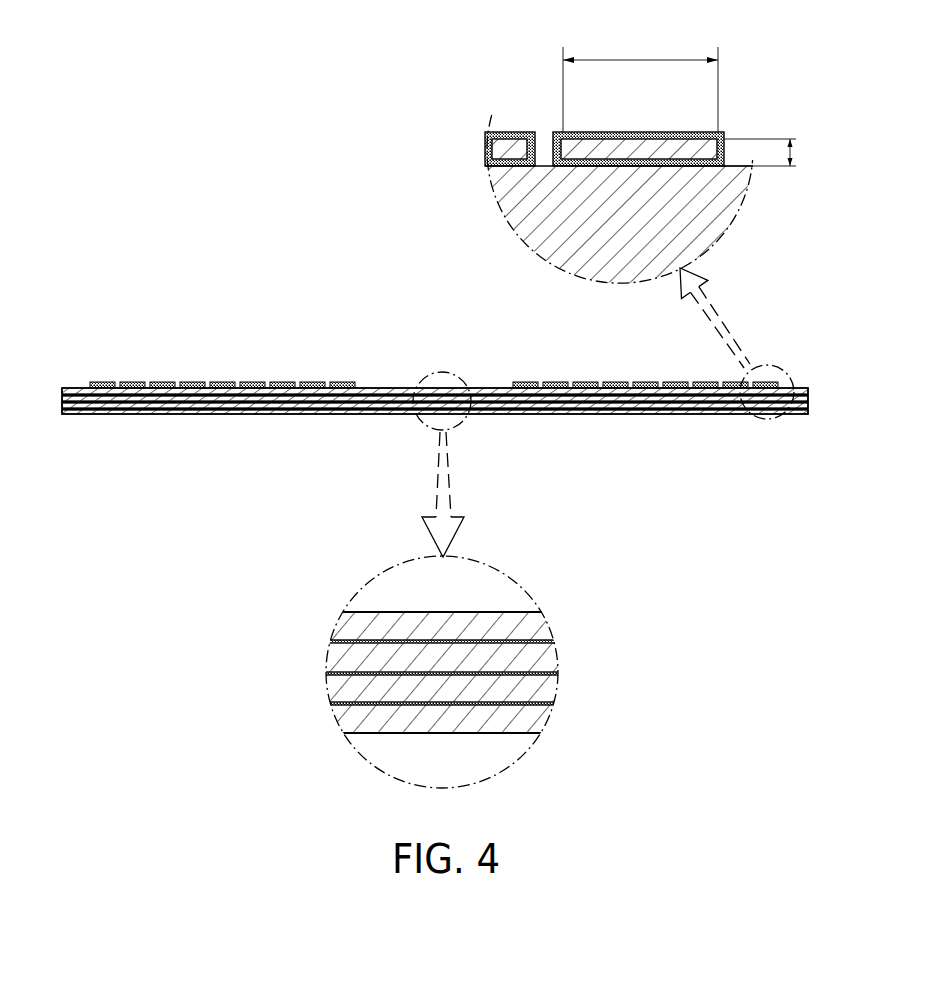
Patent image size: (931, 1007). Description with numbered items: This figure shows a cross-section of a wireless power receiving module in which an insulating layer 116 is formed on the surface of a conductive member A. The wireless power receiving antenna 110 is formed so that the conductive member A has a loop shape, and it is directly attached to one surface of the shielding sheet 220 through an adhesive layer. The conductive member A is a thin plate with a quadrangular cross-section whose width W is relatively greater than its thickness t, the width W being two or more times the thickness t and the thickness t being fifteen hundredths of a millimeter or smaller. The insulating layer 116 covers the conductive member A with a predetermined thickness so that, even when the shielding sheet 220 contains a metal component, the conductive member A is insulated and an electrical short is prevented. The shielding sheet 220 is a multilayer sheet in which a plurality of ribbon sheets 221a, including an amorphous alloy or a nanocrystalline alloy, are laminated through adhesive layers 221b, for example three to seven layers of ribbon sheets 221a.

The wireless power receiving antenna 110 is at (582, 383).
The insulating layer 116 is at (644, 110).
The shielding sheet 220 is at (630, 416).
The ribbon sheets 221a is at (547, 621).
The adhesive layers 221b is at (553, 641).
The conductive member A is at (613, 131).
The width W is at (640, 81).
The thickness t is at (768, 150).